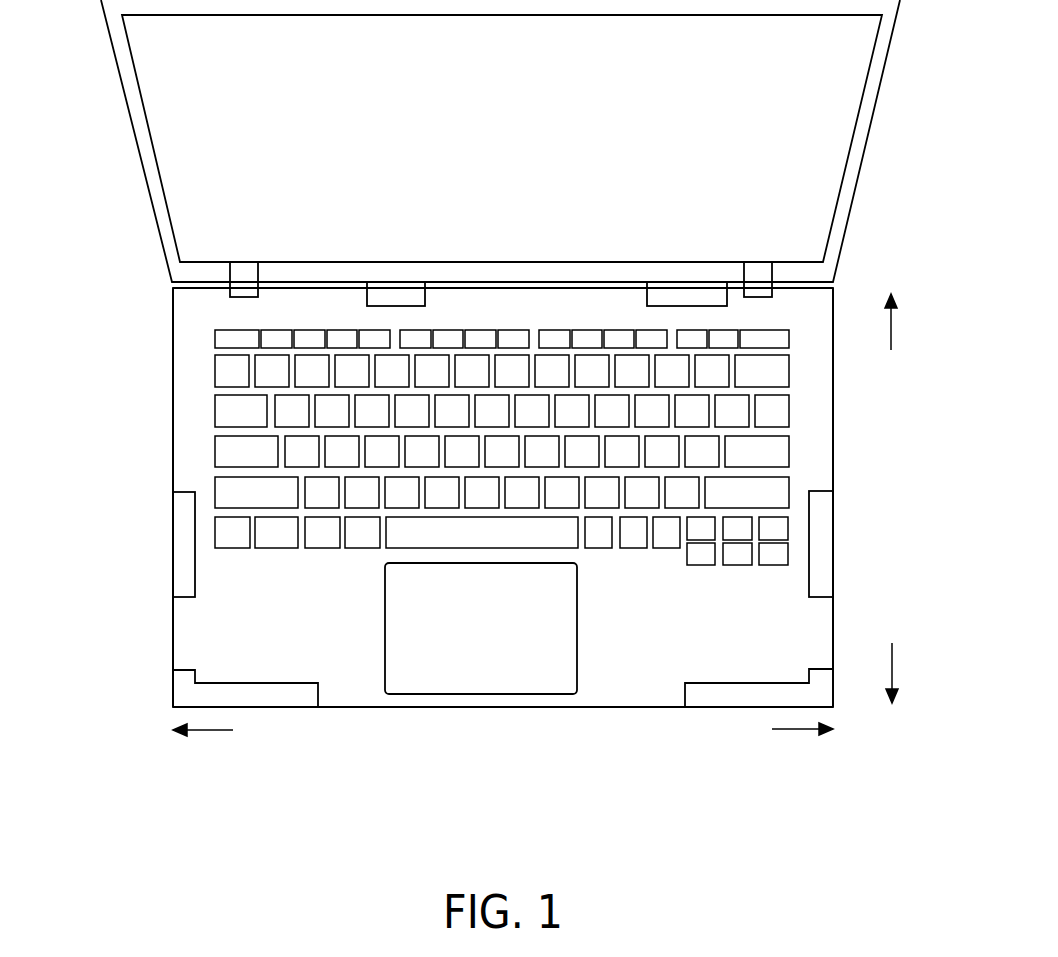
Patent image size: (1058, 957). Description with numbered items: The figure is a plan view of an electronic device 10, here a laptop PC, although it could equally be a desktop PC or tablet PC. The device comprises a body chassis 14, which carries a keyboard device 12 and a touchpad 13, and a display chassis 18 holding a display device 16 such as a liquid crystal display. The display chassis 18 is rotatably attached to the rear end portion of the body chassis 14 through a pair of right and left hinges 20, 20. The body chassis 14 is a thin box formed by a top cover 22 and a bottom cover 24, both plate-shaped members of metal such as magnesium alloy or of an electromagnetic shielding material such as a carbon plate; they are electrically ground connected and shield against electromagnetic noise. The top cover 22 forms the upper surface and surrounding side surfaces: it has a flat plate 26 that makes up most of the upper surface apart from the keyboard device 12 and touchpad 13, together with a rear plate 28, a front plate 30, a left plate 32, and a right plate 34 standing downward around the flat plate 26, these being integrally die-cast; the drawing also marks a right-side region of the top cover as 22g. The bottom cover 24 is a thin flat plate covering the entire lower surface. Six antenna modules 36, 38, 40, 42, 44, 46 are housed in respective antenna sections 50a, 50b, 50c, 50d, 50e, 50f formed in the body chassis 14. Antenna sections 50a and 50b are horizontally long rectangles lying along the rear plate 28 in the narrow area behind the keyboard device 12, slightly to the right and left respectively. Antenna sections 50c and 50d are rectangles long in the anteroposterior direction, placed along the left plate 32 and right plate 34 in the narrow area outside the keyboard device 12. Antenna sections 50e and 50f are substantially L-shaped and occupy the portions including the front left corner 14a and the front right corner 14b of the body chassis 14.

The electronic device 10 is at (75, 105).
The keyboard device 12 is at (312, 448).
The touchpad 13 is at (480, 663).
The body chassis 14 is at (440, 497).
The front left corner 14a is at (173, 705).
The front right corner 14b is at (833, 707).
The display device 16 is at (532, 141).
The display chassis 18 is at (888, 68).
The hinge 20 is at (243, 270).
The top cover 22 is at (183, 622).
The right side portion of cover 22g is at (823, 622).
The bottom cover 24 is at (173, 652).
The flat plate 26 is at (343, 663).
The rear plate 28 is at (508, 288).
The front plate 30 is at (563, 707).
The left plate 32 is at (172, 413).
The right plate 34 is at (833, 413).
The antenna module 36 is at (689, 251).
The antenna module 38 is at (401, 250).
The antenna module 40 is at (119, 544).
The antenna module 42 is at (885, 544).
The antenna module 44 is at (245, 739).
The antenna module 46 is at (759, 739).
The antenna section 50a is at (688, 293).
The antenna section 50b is at (395, 293).
The antenna section 50c is at (182, 503).
The antenna section 50d is at (823, 505).
The antenna section 50e is at (267, 697).
The antenna section 50f is at (738, 695).